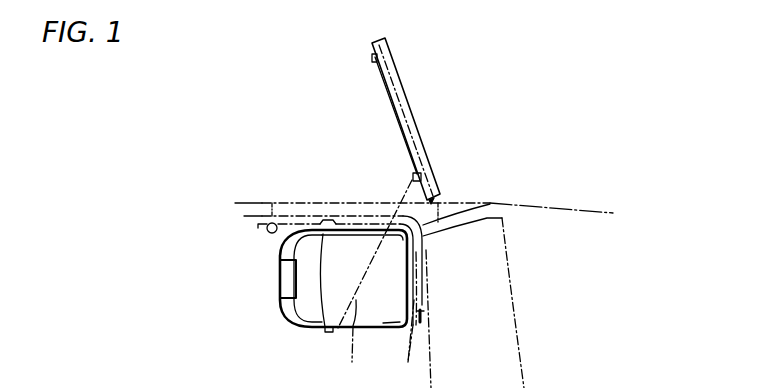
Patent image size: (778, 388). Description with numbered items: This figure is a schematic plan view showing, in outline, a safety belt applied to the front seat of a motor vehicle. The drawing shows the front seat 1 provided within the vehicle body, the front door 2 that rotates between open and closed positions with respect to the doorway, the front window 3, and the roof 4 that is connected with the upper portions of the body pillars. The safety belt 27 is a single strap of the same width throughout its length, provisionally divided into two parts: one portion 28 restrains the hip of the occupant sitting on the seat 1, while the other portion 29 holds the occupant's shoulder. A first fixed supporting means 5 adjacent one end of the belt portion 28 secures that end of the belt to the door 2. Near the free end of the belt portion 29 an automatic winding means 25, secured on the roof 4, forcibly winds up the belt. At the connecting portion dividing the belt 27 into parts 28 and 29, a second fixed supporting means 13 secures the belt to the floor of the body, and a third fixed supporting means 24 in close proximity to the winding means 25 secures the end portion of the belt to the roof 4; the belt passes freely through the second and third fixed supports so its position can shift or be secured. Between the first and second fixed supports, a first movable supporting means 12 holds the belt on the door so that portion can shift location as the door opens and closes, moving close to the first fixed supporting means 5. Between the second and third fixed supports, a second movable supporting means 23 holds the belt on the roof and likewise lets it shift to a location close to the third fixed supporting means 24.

The front seat 1 is at (325, 295).
The front door 2 is at (421, 142).
The front window 3 is at (492, 231).
The roof 4 is at (345, 218).
The first fixed supporting means 5 is at (372, 57).
The first movable supporting means 12 is at (413, 177).
The second fixed supporting means 13 is at (328, 334).
The second movable supporting means 23 is at (424, 315).
The third fixed supporting means 24 is at (327, 221).
The automatic winding means 25 is at (268, 233).
The safety belt 27 is at (419, 257).
The hip belt portion 28 is at (349, 357).
The shoulder belt portion 29 is at (402, 344).